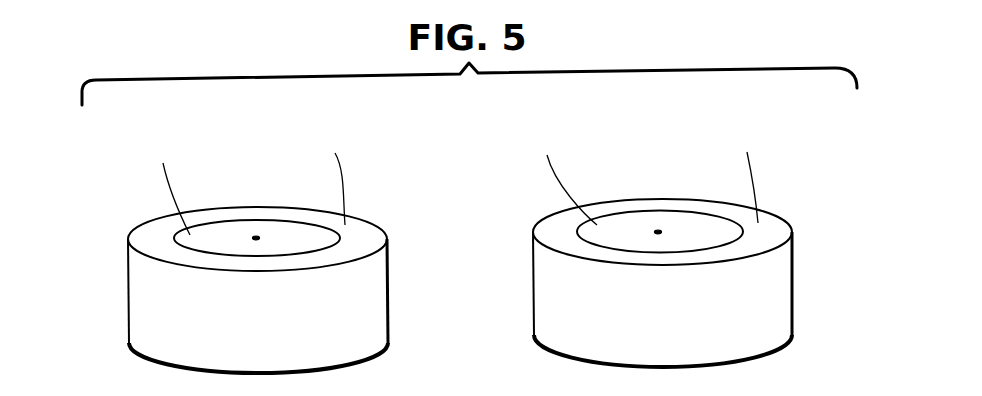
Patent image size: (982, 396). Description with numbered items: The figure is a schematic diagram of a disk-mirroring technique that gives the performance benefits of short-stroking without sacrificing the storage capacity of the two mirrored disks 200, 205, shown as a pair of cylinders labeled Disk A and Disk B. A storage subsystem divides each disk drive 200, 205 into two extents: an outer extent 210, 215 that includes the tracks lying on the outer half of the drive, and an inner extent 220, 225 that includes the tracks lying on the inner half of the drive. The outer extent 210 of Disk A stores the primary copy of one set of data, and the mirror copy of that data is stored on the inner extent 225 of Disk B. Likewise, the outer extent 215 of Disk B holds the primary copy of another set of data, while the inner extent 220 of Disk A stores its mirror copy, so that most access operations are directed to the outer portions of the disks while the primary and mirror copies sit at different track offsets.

The mirrored disk 200 is at (390, 302).
The mirrored disk 205 is at (792, 280).
The outer extent 210 is at (372, 233).
The outer extent 215 is at (777, 225).
The inner extent 220 is at (250, 225).
The inner extent 225 is at (660, 218).